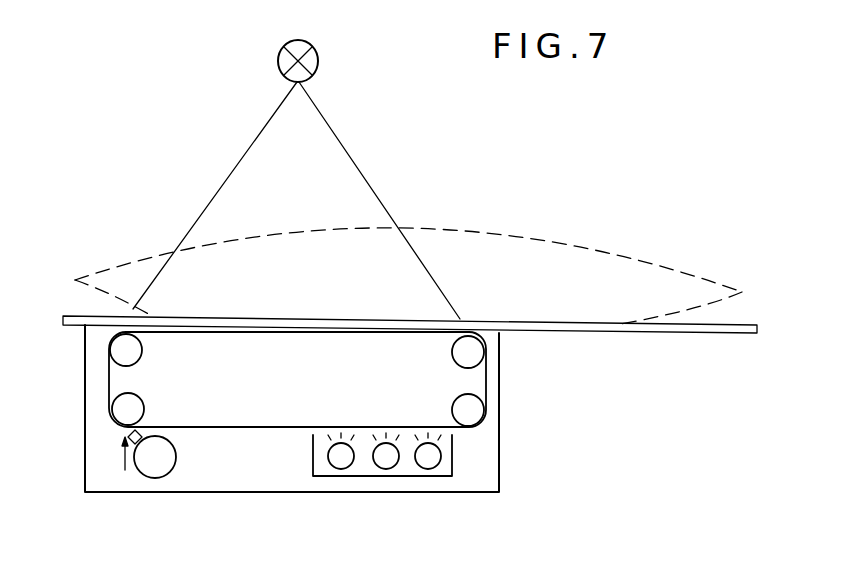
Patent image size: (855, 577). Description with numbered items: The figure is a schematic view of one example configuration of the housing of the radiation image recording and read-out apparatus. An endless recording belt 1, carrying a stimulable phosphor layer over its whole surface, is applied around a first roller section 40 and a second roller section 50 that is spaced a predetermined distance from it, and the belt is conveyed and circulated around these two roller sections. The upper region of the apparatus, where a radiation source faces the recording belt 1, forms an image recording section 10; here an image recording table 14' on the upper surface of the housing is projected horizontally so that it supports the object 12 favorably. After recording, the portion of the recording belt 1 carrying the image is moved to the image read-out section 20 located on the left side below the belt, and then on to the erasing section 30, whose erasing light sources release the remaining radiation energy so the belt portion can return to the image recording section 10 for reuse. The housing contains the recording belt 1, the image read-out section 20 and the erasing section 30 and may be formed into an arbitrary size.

The recording belt 1 is at (245, 334).
The image recording section 10 is at (383, 167).
The object 12 is at (487, 230).
The image recording table 14' is at (410, 303).
The image read-out section 20 is at (107, 461).
The erasing section 30 is at (423, 483).
The first roller section 40 is at (109, 374).
The second roller section 50 is at (487, 380).